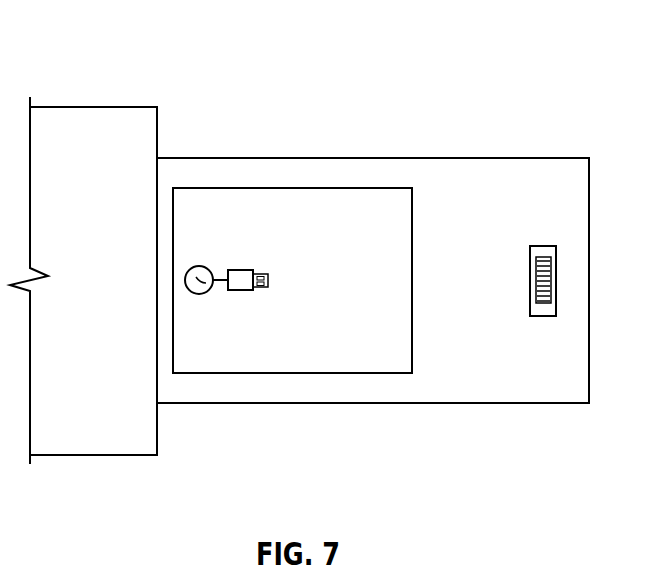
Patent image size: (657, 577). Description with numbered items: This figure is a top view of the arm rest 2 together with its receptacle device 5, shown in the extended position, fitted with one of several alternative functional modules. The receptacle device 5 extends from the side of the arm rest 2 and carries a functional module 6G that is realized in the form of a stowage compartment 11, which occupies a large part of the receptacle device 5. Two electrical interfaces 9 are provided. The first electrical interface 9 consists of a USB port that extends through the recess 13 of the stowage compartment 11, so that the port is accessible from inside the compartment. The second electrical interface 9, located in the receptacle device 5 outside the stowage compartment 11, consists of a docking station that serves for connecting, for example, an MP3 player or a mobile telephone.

The arm rest 2 is at (82, 107).
The receptacle device 5 is at (565, 158).
The stowage compartment 11 is at (383, 188).
The recess 13 is at (198, 266).
The electrical interface 9 is at (240, 270).
The functional module 6G is at (313, 375).